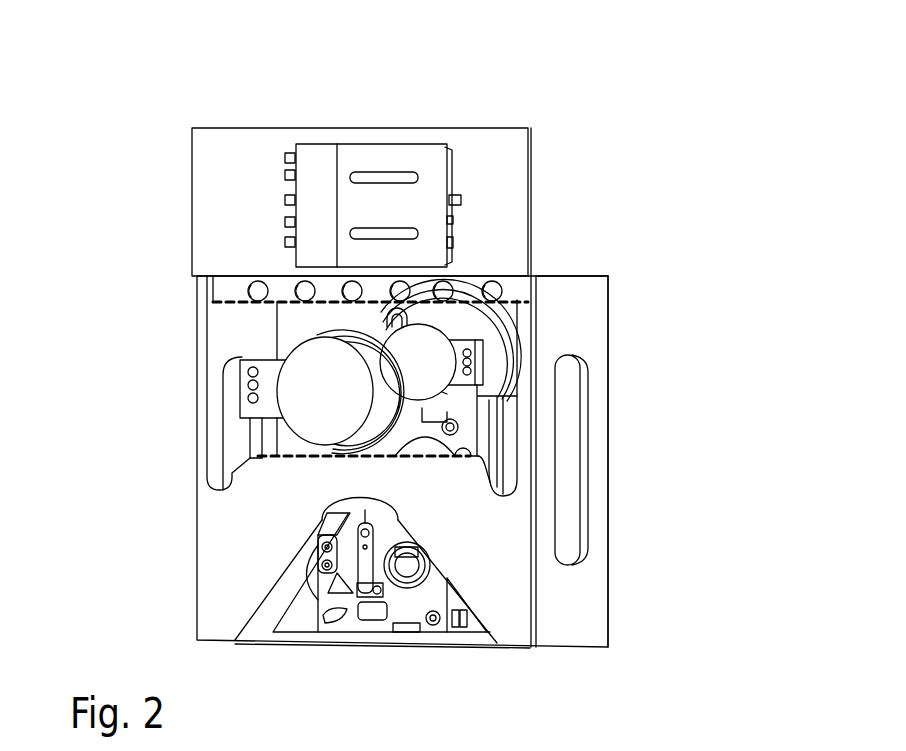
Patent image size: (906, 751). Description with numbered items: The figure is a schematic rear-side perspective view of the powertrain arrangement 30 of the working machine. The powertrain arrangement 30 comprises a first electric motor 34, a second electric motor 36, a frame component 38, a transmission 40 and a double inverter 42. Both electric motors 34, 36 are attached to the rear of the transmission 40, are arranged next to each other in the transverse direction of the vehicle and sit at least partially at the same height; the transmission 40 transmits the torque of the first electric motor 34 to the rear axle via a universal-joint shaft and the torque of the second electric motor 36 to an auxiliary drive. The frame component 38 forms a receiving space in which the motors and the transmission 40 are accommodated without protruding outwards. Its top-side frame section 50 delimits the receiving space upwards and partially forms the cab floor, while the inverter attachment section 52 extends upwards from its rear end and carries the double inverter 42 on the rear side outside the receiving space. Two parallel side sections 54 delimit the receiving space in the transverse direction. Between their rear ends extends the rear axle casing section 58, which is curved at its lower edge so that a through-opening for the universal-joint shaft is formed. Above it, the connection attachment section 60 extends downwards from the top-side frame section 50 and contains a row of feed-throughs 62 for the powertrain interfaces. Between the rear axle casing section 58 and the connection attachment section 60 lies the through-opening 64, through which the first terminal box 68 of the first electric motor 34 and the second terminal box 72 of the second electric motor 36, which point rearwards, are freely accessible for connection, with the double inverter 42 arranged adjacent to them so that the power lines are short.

The powertrain arrangement 30 is at (125, 134).
The first electric motor 34 is at (313, 407).
The second electric motor 36 is at (430, 388).
The frame component 38 is at (632, 608).
The transmission 40 is at (411, 606).
The double inverter 42 is at (432, 162).
The top-side frame section 50 is at (600, 270).
The inverter attachment section 52 is at (520, 150).
The side sections 54 is at (217, 336).
The rear axle casing section 58 is at (498, 574).
The connection attachment section 60 is at (527, 284).
The feed-throughs 62 is at (410, 288).
The through-opening 64 is at (515, 427).
The first terminal box 68 is at (242, 387).
The second terminal box 72 is at (474, 362).